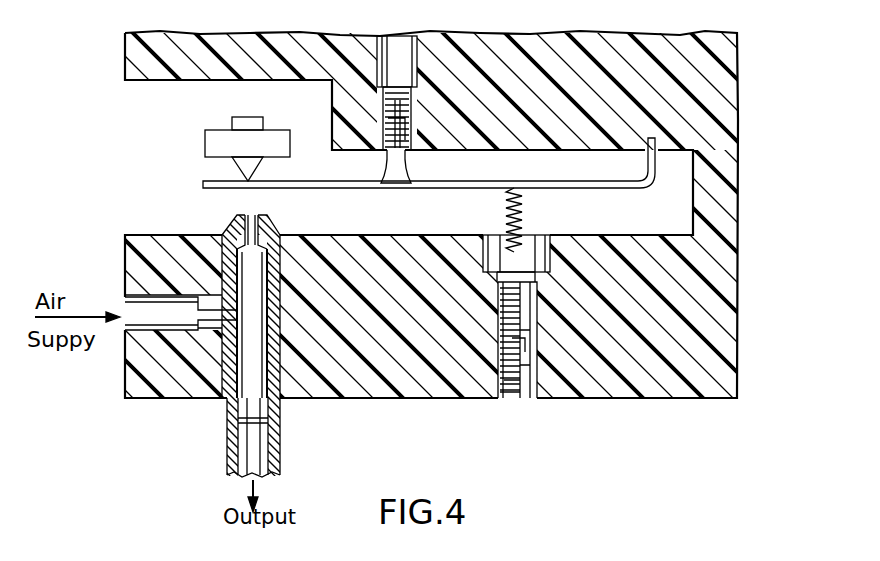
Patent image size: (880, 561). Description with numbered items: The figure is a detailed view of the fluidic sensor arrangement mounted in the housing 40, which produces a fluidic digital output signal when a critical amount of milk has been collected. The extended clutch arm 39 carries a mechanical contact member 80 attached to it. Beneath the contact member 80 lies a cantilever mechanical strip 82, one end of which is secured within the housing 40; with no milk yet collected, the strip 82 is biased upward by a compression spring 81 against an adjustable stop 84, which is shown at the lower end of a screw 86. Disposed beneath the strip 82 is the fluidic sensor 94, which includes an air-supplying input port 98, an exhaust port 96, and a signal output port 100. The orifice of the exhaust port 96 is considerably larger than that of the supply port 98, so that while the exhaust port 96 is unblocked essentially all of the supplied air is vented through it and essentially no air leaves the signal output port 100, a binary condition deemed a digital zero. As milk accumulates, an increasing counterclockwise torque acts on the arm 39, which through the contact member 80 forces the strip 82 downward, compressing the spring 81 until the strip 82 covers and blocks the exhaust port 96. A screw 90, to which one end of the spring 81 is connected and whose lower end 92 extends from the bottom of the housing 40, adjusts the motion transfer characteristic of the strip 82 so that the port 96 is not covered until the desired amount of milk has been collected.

The housing 40 is at (723, 86).
The extended clutch arm 39 is at (210, 138).
The mechanical contact member 80 is at (240, 164).
The cantilever mechanical strip 82 is at (450, 190).
The adjustable stop 84 is at (413, 152).
The adjusting screw 86 is at (373, 70).
The compression spring 81 is at (520, 232).
The screw 90 is at (540, 320).
The lower end of fitting 92 is at (517, 396).
The fluidic sensor 94 is at (280, 236).
The exhaust port 96 is at (245, 214).
The air-supplying input port 98 is at (205, 322).
The signal output port 100 is at (252, 420).